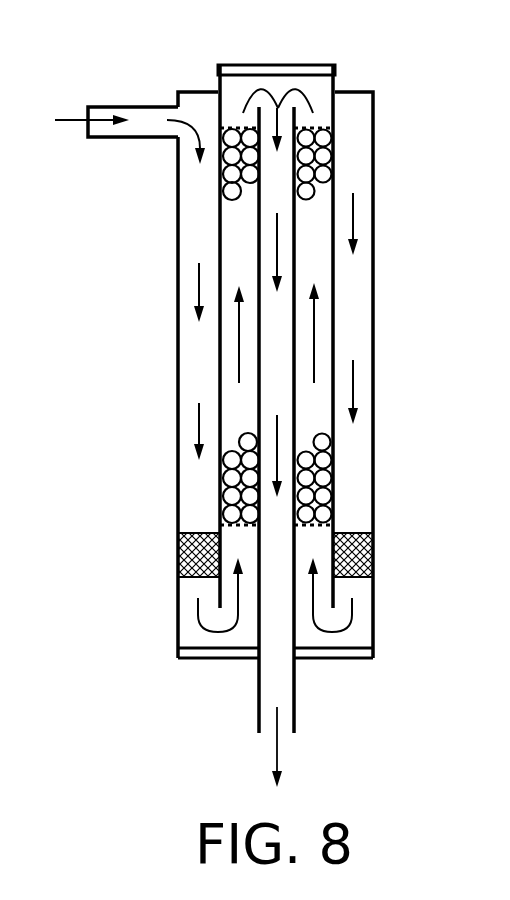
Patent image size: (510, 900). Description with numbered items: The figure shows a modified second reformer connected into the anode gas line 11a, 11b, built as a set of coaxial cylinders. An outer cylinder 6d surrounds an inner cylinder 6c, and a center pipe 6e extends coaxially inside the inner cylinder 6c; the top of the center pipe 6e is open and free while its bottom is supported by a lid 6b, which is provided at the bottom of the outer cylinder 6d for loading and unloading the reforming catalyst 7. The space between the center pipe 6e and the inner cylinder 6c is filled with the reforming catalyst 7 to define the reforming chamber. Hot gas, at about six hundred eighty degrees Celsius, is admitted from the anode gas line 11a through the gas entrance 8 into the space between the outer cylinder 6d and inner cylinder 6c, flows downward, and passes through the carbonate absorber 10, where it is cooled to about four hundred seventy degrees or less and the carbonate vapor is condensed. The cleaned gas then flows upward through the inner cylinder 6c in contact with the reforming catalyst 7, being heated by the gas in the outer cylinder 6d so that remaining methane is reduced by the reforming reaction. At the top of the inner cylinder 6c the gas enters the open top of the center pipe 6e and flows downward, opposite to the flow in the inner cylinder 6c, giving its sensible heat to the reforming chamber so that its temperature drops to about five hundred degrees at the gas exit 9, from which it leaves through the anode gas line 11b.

The lid 6b is at (293, 70).
The inner cylinder 6c is at (218, 333).
The outer cylinder 6d is at (178, 223).
The center pipe 6e is at (293, 338).
The reforming catalyst 7 is at (320, 178).
The gas entrance 8 is at (143, 105).
The gas exit 9 is at (295, 693).
The carbonate absorber 10 is at (178, 563).
The anode gas line 11a is at (70, 118).
The anode gas line 11b is at (280, 745).